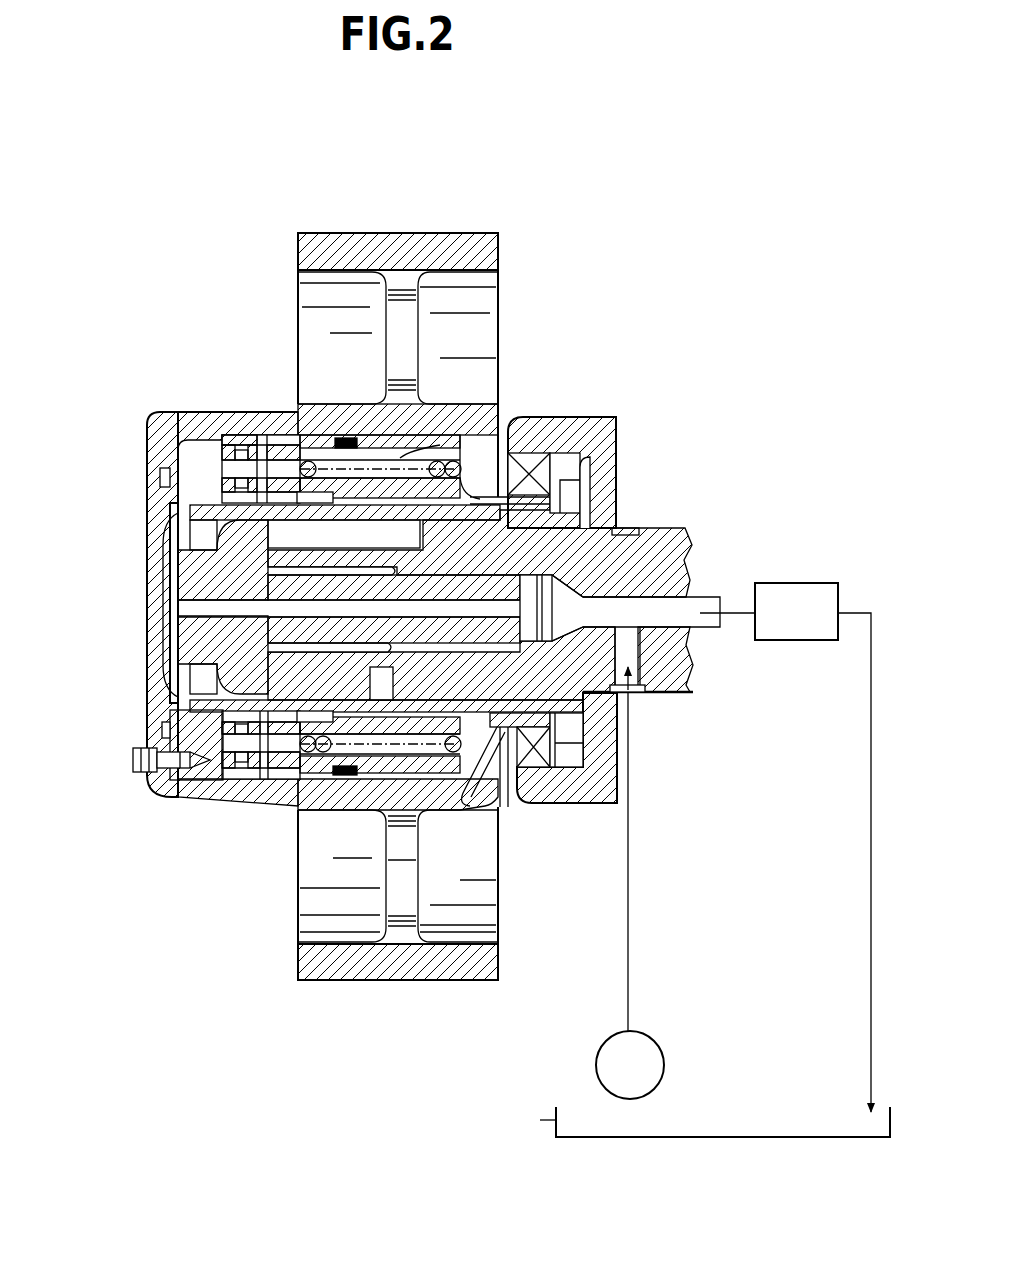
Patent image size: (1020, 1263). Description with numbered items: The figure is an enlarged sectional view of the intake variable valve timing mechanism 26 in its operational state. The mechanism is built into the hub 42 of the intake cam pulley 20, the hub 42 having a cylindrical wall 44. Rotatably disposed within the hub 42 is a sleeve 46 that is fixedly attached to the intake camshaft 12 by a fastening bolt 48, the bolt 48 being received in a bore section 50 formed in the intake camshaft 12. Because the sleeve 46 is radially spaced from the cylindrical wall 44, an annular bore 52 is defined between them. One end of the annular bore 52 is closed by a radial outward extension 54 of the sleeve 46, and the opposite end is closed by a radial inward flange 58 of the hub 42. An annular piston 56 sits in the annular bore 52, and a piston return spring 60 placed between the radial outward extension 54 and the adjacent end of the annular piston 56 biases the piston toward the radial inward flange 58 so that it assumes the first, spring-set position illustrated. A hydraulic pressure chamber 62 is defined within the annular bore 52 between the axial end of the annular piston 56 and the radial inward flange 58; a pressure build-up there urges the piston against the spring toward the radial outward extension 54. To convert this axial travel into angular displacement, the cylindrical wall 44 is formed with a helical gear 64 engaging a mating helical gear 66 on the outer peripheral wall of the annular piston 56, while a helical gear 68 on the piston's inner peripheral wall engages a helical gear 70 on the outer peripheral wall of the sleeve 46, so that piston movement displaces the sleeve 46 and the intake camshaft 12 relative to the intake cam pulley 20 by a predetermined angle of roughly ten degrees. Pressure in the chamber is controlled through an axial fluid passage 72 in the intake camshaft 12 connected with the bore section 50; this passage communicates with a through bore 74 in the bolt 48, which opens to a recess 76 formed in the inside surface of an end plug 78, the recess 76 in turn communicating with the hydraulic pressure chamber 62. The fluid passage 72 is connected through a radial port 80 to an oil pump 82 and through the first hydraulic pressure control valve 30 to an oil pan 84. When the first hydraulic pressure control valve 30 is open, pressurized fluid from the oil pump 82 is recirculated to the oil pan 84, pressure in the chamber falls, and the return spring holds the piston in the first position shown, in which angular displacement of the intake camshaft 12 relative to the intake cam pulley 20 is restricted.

The intake camshaft 12 is at (665, 537).
The intake cam pulley 20 is at (455, 233).
The intake variable valve timing mechanism 26 is at (233, 367).
The first hydraulic pressure control valve 30 is at (783, 583).
The hub 42 is at (227, 410).
The cylindrical wall 44 is at (397, 442).
The sleeve 46 is at (177, 630).
The fastening bolt 48 is at (187, 560).
The bore section 50 is at (575, 497).
The annular bore 52 is at (400, 775).
The radial outward extension 54 is at (500, 777).
The annular piston 56 is at (210, 800).
The radial inward flange 58 is at (175, 727).
The piston return spring 60 is at (303, 780).
The hydraulic pressure chamber 62 is at (200, 455).
The helical gear 64 is at (278, 433).
The helical gear 66 is at (255, 800).
The helical gear 68 is at (197, 703).
The helical gear 70 is at (218, 490).
The axial fluid passage 72 is at (667, 600).
The through bore 74 is at (188, 608).
The recess 76 is at (173, 573).
The end plug 78 is at (158, 476).
The radial port 80 is at (630, 643).
The oil pump 82 is at (666, 1060).
The oil pan 84 is at (540, 1120).